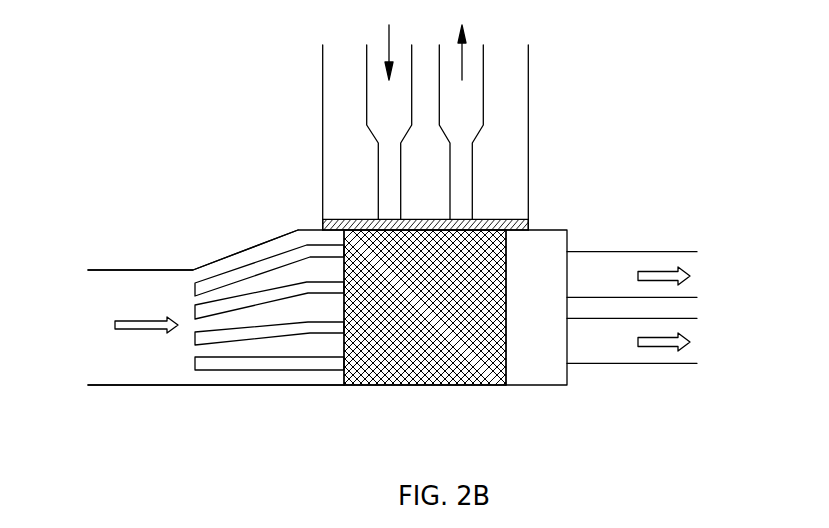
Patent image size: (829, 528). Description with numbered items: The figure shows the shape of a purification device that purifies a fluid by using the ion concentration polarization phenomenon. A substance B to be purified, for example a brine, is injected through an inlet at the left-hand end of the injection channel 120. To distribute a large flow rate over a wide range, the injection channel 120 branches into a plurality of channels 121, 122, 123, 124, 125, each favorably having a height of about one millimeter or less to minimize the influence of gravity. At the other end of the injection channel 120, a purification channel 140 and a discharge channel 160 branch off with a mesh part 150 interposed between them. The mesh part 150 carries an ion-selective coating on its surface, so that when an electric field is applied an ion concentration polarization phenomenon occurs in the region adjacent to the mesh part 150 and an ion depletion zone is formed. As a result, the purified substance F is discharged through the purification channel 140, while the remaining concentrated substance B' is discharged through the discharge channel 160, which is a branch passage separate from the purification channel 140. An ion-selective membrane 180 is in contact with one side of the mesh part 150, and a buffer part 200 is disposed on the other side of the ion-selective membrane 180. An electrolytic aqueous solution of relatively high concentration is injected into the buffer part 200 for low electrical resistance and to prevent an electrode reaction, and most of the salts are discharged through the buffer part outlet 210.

The injection channel 120 is at (115, 325).
The channel 121 is at (255, 258).
The channel 122 is at (237, 288).
The channel 123 is at (237, 322).
The channel 124 is at (247, 348).
The channel 125 is at (292, 377).
The purification channel 140 is at (658, 262).
The mesh part 150 is at (428, 364).
The discharge channel 160 is at (658, 353).
The ion-selective membrane 180 is at (322, 223).
The buffer part 200 is at (378, 92).
The buffer part outlet 210 is at (472, 92).